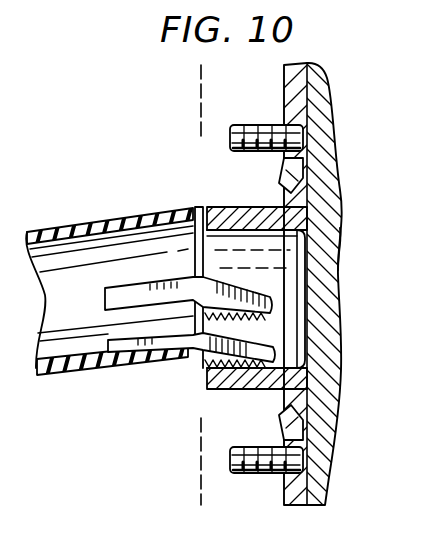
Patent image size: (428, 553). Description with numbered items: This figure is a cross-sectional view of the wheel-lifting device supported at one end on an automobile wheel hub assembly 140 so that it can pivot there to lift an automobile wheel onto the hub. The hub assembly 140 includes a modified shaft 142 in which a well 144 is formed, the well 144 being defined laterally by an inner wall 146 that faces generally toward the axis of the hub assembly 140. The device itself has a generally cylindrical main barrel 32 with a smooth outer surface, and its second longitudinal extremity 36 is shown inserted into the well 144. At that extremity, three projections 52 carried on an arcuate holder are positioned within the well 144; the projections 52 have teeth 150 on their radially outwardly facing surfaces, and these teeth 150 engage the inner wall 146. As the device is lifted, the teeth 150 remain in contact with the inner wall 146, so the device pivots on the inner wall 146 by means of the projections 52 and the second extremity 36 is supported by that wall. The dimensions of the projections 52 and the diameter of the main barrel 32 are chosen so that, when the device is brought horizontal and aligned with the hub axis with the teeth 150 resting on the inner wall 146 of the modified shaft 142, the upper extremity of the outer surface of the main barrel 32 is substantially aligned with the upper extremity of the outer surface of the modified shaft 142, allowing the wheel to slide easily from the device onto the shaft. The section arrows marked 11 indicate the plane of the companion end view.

The section line 11 is at (172, 95).
The main barrel 32 is at (73, 375).
The second longitudinal extremity 36 is at (124, 199).
The projections 52 is at (200, 345).
The automobile wheel hub assembly 140 is at (340, 122).
The modified shaft 142 is at (240, 206).
The well 144 is at (290, 278).
The inner wall 146 is at (338, 250).
The teeth 150 is at (263, 331).